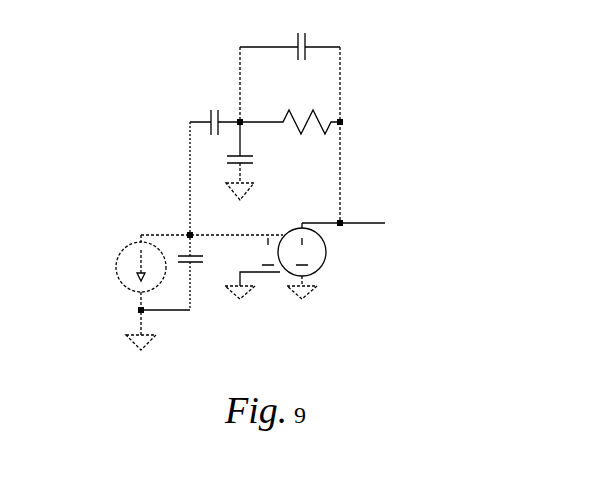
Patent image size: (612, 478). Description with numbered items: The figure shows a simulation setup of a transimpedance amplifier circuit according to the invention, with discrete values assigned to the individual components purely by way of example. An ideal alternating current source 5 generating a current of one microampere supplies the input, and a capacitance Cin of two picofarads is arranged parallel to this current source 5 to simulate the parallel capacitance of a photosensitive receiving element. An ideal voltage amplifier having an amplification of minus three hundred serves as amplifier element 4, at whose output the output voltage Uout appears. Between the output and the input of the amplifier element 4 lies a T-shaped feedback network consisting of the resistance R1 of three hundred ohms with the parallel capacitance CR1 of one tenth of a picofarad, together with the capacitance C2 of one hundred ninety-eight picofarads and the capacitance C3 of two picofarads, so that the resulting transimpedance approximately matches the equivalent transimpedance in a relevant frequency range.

The amplifier element 4 is at (320, 266).
The current source 5 is at (121, 258).
The parallel capacitance CR1 is at (305, 37).
The capacitance C3 is at (211, 110).
The resistance R1 is at (320, 118).
The capacitance C2 is at (237, 163).
The capacitance Cin is at (197, 262).
The output voltage Uout is at (366, 223).